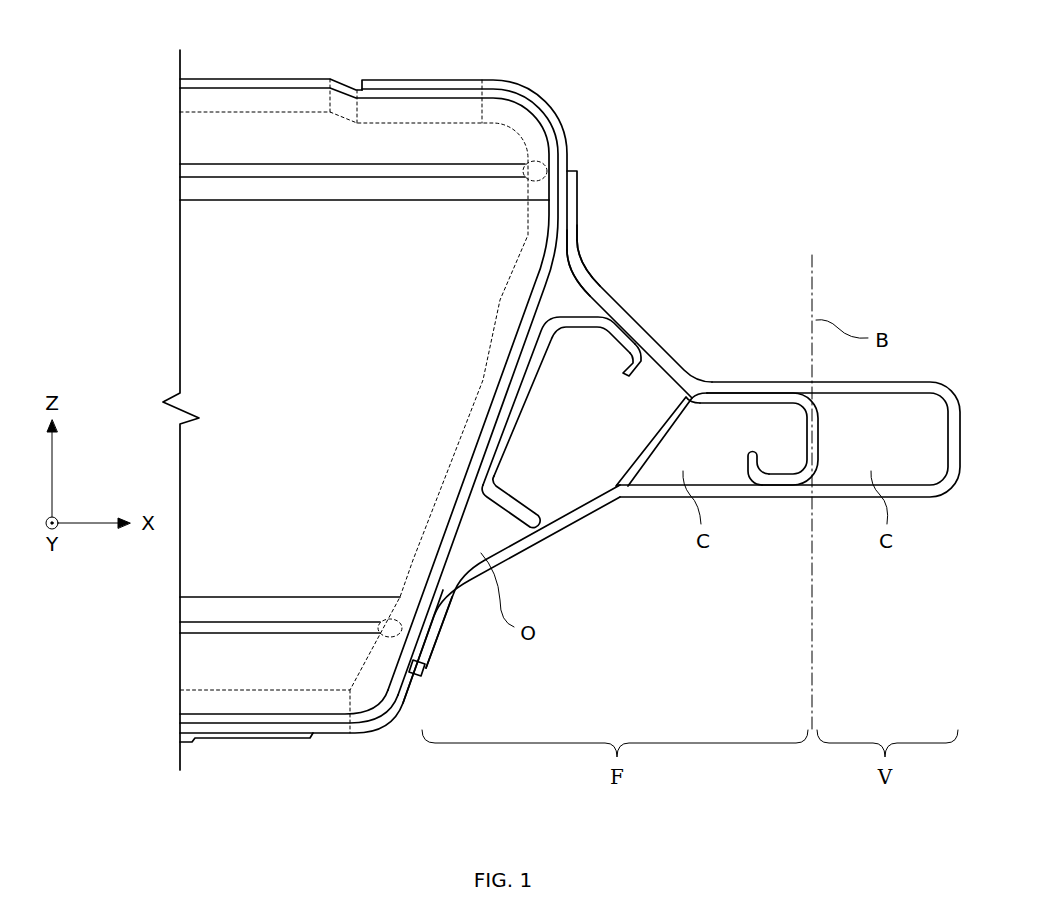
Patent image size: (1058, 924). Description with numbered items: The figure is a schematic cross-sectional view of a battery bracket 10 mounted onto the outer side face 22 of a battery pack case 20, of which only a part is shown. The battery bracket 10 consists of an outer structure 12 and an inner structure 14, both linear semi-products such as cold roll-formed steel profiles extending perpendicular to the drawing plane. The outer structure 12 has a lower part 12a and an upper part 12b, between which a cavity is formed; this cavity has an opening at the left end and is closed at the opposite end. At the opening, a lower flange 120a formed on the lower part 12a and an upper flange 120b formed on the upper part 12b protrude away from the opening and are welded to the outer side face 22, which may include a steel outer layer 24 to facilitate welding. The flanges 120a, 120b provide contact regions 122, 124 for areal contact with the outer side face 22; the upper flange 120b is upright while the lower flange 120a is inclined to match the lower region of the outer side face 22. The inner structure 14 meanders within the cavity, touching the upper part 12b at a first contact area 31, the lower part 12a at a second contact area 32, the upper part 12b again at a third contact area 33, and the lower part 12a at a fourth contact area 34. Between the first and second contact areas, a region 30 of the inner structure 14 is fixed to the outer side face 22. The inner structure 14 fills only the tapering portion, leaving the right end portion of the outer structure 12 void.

The battery bracket 10 is at (763, 461).
The outer structure 12 is at (763, 442).
The lower part 12a is at (768, 492).
The upper part 12b is at (653, 340).
The inner structure 14 is at (630, 466).
The battery pack case 20 is at (232, 80).
The outer side face 22 is at (505, 530).
The outer layer 24 is at (422, 78).
The region 30 is at (532, 374).
The first contact area 31 is at (614, 338).
The second contact area 32 is at (558, 513).
The third contact area 33 is at (730, 403).
The fourth contact area 34 is at (778, 470).
The lower flange 120a is at (440, 632).
The upper flange 120b is at (578, 232).
The contact region 122 is at (428, 672).
The contact region 124 is at (570, 187).